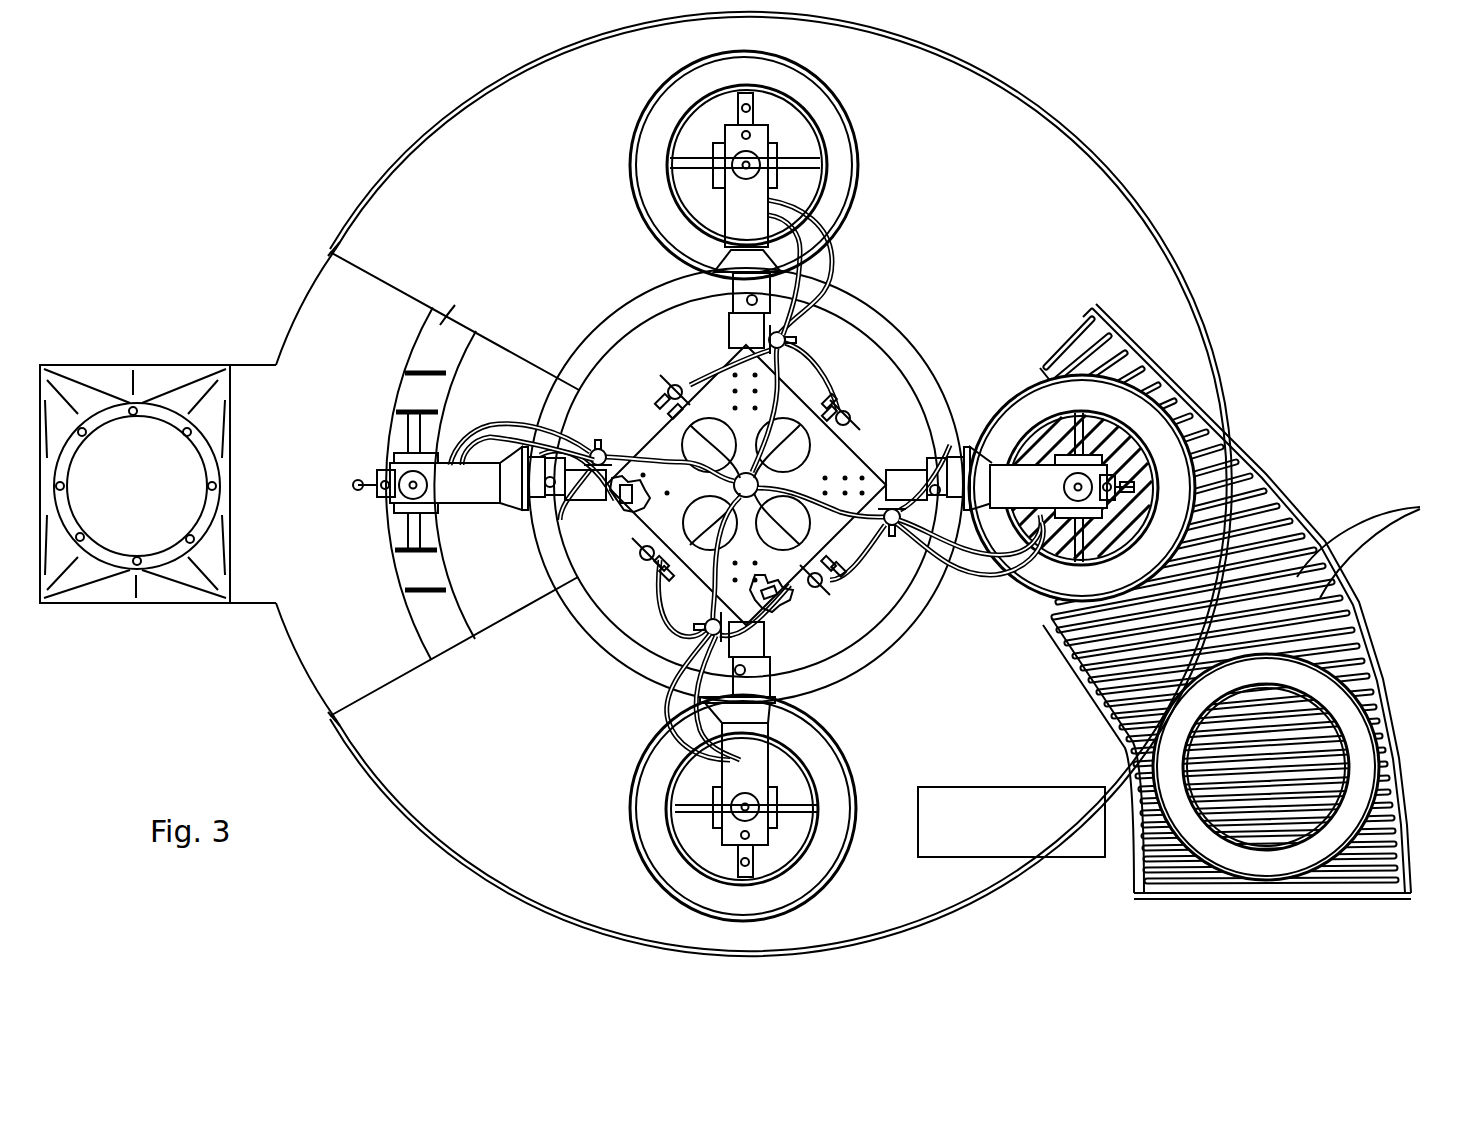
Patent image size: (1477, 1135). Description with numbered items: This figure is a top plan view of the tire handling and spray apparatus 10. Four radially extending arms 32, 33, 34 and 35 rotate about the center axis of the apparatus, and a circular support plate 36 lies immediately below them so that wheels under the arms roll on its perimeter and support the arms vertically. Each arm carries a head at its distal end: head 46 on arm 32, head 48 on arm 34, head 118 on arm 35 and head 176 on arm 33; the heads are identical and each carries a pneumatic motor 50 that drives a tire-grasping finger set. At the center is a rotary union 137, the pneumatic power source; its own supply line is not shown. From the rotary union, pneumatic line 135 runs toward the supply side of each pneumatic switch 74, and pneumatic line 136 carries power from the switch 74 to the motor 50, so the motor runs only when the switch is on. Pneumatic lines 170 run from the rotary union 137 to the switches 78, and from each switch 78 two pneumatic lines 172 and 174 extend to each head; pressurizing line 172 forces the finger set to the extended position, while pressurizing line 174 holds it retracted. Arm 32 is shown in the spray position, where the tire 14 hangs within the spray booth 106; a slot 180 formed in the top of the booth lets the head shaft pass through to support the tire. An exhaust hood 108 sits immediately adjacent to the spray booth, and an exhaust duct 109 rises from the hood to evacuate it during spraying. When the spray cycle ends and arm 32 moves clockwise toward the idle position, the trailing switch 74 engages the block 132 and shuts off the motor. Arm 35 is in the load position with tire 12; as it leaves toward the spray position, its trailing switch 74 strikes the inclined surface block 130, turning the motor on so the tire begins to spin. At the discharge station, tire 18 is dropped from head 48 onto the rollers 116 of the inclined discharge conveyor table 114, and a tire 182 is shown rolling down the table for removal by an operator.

The tire handling and spray apparatus 10 is at (1188, 210).
The tire 12 is at (820, 872).
The tire 14 is at (403, 393).
The tire 18 is at (1140, 420).
The arm 32 is at (590, 512).
The arm 33 is at (735, 322).
The arm 34 is at (920, 450).
The arm 35 is at (790, 690).
The circular support plate 36 is at (875, 335).
The head 46 is at (372, 468).
The head 48 is at (1100, 470).
The pneumatic motor 50 is at (742, 292).
The pneumatic switch 74 is at (672, 386).
The switch 78 is at (602, 448).
The spray booth 106 is at (505, 340).
The exhaust hood 108 is at (156, 365).
The exhaust duct 109 is at (68, 470).
The discharge conveyor table 114 is at (1390, 668).
The rollers 116 is at (1192, 674).
The head 118 is at (800, 770).
The block 130 is at (785, 598).
The block 132 is at (627, 507).
The pneumatic line 135 is at (662, 388).
The pneumatic line 136 is at (680, 330).
The rotary union 137 is at (746, 485).
The pneumatic line 170 is at (640, 445).
The pneumatic line 172 is at (832, 262).
The pneumatic line 174 is at (840, 262).
The head 176 is at (660, 220).
The slot 180 is at (452, 318).
The tire 182 is at (1358, 775).